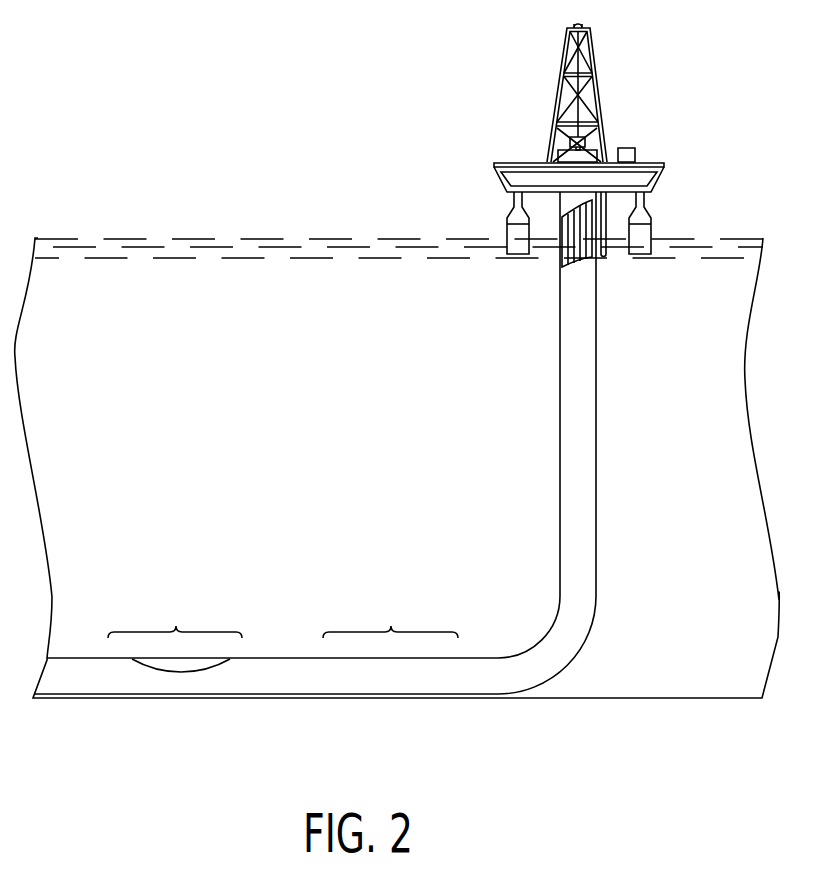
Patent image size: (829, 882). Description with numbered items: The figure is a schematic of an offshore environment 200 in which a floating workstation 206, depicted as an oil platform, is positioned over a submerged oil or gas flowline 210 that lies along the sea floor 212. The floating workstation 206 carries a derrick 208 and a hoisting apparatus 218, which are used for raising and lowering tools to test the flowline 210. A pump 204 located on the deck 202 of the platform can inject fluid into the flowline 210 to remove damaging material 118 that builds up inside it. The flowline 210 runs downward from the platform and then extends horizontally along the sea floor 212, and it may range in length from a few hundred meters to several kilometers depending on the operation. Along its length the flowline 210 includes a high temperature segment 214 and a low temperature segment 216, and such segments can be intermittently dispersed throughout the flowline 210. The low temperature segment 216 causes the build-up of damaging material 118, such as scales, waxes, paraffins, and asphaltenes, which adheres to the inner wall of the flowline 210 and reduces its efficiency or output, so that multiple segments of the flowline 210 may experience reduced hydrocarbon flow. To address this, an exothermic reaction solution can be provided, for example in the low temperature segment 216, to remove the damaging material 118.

The offshore environment 200 is at (148, 152).
The deck 202 is at (502, 182).
The pump 204 is at (636, 156).
The floating workstation 206 is at (645, 229).
The derrick 208 is at (592, 58).
The flowline 210 is at (558, 430).
The sea floor 212 is at (662, 697).
The high temperature segment 214 is at (390, 612).
The low temperature segment 216 is at (175, 611).
The hoisting apparatus 218 is at (586, 140).
The damaging material 118 is at (172, 662).